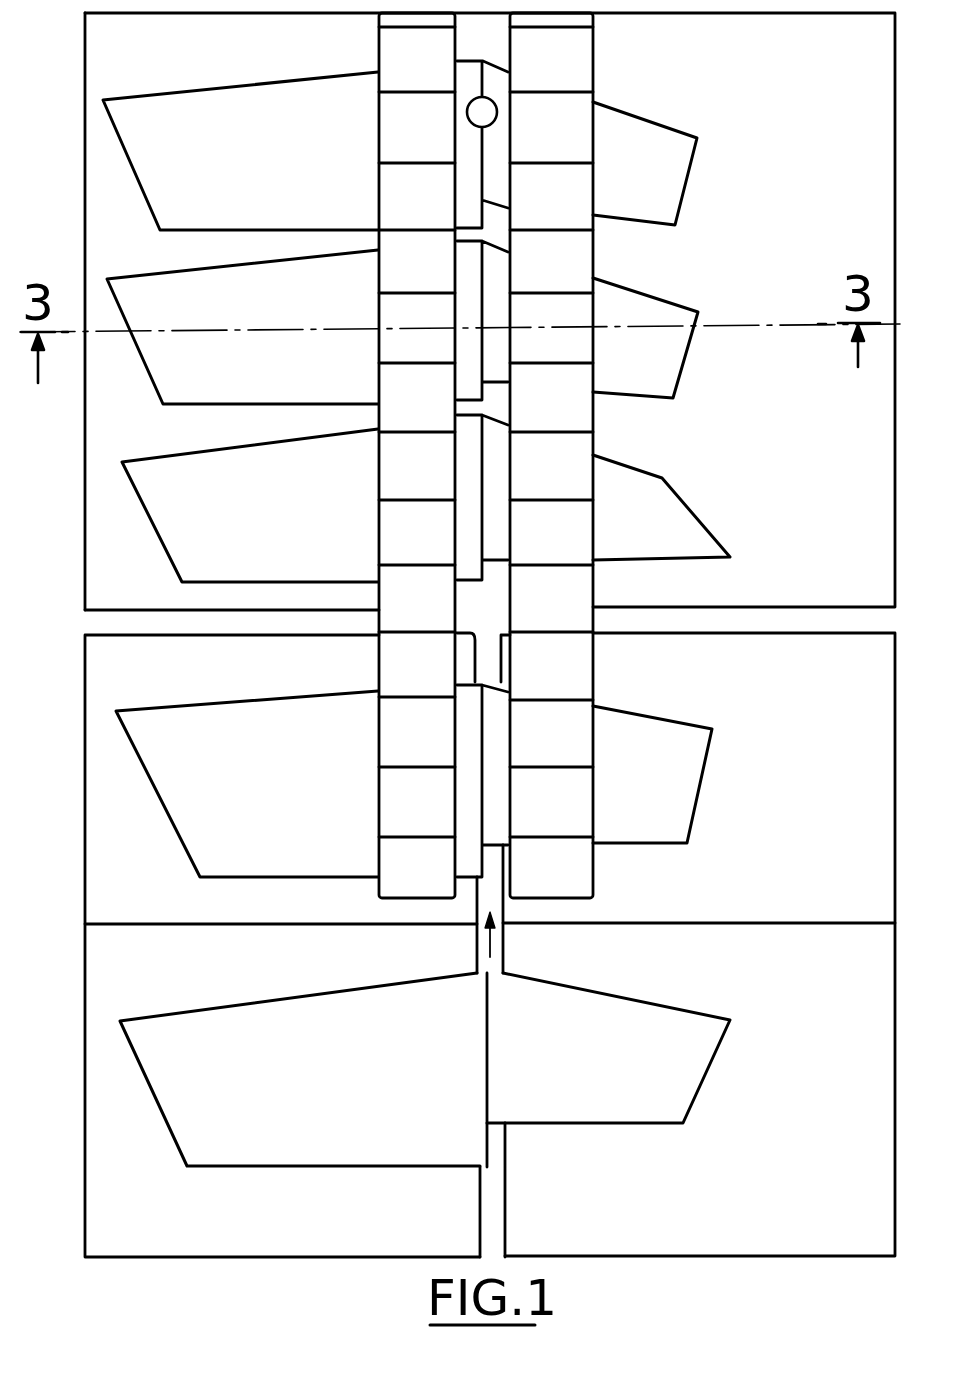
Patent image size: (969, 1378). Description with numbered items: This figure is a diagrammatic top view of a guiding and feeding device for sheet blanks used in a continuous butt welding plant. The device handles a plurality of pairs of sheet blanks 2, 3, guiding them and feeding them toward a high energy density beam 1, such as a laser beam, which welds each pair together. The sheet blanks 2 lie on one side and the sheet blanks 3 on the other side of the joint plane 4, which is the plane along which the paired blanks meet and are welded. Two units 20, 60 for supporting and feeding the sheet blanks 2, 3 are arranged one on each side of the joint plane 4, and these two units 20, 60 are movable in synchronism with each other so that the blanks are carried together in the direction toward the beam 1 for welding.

The high energy density beam 1 is at (493, 101).
The sheet blank 2 is at (148, 163).
The sheet blank 3 is at (668, 178).
The joint plane 4 is at (484, 372).
The unit for supporting and feeding the sheet blanks 20 is at (379, 622).
The unit for supporting and feeding the sheet blanks 60 is at (595, 620).